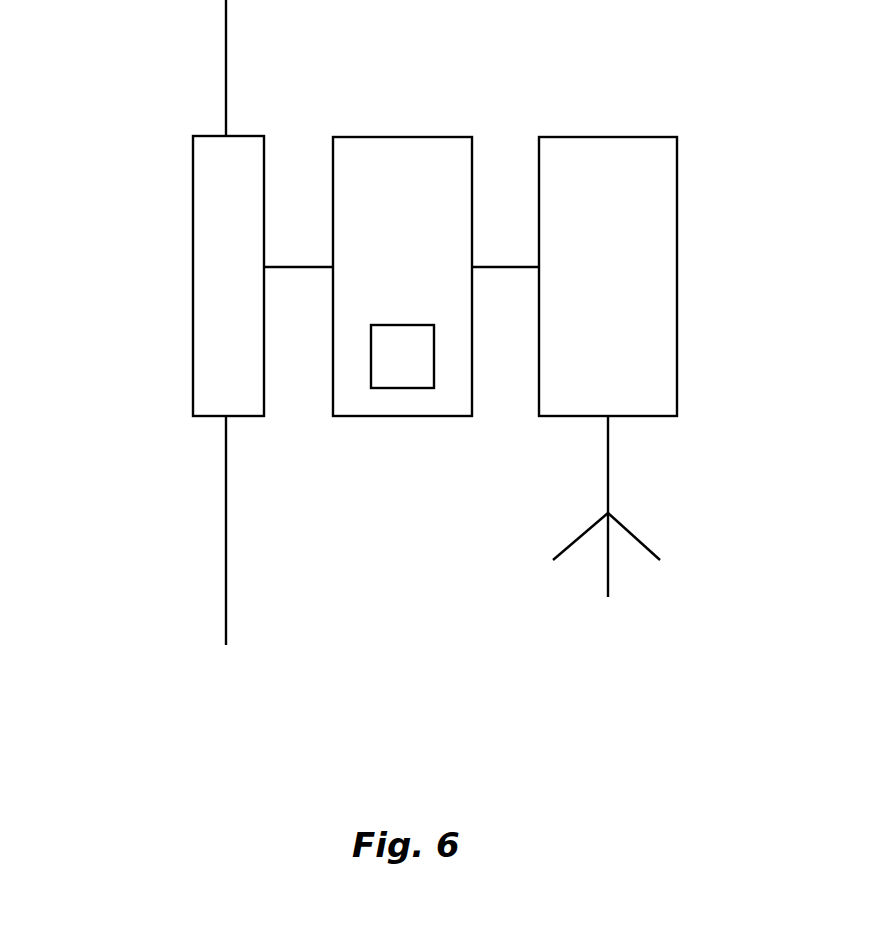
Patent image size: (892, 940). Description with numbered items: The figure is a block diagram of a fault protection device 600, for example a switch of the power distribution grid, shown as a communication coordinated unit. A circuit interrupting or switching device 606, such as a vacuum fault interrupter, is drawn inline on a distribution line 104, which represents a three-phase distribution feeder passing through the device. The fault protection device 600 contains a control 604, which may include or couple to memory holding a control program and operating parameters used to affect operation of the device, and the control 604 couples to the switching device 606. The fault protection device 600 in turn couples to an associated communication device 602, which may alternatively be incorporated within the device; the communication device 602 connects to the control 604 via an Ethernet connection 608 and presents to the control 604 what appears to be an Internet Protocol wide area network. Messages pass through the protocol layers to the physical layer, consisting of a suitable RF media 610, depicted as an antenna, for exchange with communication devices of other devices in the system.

The distribution line 104 is at (227, 30).
The fault protection device 600 is at (394, 136).
The communication device 602 is at (603, 136).
The control 604 is at (396, 337).
The circuit interrupting or switching device 606 is at (193, 295).
The Ethernet connection 608 is at (266, 266).
The RF media 610 is at (609, 480).